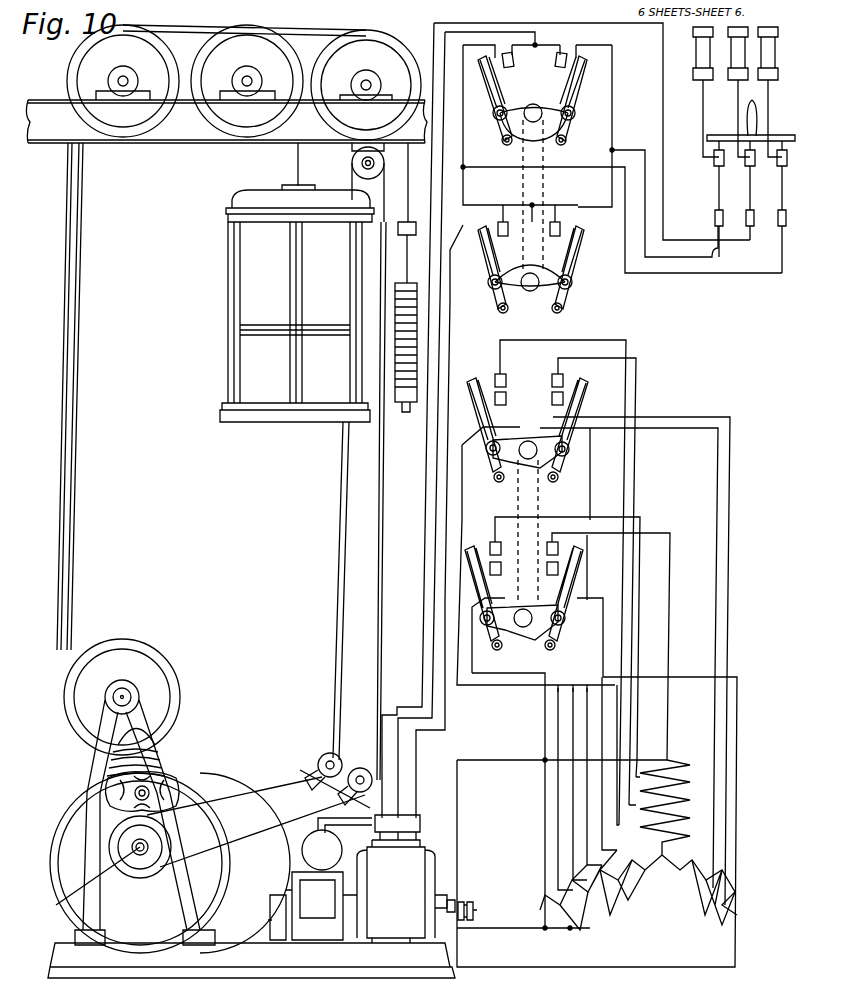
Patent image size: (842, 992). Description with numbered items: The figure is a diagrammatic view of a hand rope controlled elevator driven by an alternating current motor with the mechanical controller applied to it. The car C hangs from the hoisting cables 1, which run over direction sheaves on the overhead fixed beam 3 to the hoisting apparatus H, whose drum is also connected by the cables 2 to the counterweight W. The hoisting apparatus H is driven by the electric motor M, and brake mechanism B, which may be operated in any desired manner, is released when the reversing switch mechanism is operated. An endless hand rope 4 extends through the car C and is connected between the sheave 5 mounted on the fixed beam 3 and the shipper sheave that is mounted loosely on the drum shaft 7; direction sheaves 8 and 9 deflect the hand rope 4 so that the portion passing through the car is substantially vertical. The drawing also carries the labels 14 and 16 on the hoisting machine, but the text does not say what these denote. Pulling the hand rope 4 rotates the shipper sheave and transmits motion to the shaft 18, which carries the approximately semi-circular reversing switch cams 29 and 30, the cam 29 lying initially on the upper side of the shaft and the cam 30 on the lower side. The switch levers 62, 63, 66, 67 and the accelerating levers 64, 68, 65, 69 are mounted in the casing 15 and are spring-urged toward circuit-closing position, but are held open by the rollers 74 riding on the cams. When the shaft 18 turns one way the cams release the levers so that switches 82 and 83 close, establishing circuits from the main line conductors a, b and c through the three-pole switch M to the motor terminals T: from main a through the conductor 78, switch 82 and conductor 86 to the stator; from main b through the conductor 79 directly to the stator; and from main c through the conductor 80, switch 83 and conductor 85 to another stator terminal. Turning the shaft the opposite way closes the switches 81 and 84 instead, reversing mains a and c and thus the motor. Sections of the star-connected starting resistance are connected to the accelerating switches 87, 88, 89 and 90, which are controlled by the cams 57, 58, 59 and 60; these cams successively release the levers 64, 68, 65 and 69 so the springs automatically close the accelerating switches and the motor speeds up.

The hoisting cables 1 is at (297, 160).
The cables 2 is at (73, 542).
The overhead fixed beam 3 is at (140, 147).
The hand rope 4 is at (342, 622).
The sheave 5 is at (355, 160).
The drum shaft 7 is at (91, 881).
The direction sheave 8 is at (320, 752).
The direction sheave 9 is at (352, 750).
The frame 14 is at (158, 752).
The casing 15 is at (165, 780).
The pulley 16 is at (140, 877).
The shaft 18 is at (533, 104).
The reversing switch cam 29 is at (540, 275).
The reversing switch cam 30 is at (533, 145).
The cam 57 is at (512, 440).
The cam 58 is at (540, 440).
The cam 59 is at (515, 578).
The cam 60 is at (530, 608).
The switch lever 62 is at (478, 278).
The switch lever 63 is at (494, 100).
The switch lever 64 is at (485, 452).
The switch lever 65 is at (485, 650).
The switch lever 66 is at (572, 278).
The switch lever 67 is at (575, 105).
The switch lever 68 is at (566, 455).
The switch lever 69 is at (556, 650).
The rollers 74 is at (505, 108).
The conductor 78 is at (620, 148).
The conductor 79 is at (421, 592).
The conductor 80 is at (485, 148).
The switch 81 is at (566, 53).
The switch 82 is at (572, 218).
The switch 83 is at (503, 53).
The switch 84 is at (508, 218).
The conductor 85 is at (450, 95).
The conductor 86 is at (462, 325).
The accelerating switch 87 is at (487, 375).
The accelerating switch 88 is at (565, 372).
The accelerating switch 89 is at (480, 540).
The accelerating switch 90 is at (575, 520).
The car C is at (246, 274).
The counterweight W is at (402, 405).
The hoisting apparatus H is at (205, 783).
The brake mechanism B is at (320, 879).
The electric motor / three-pole switch M is at (712, 190).
The motor terminals T is at (428, 822).
The main line conductor a is at (702, 104).
The main line conductor b is at (737, 104).
The main line conductor c is at (762, 98).